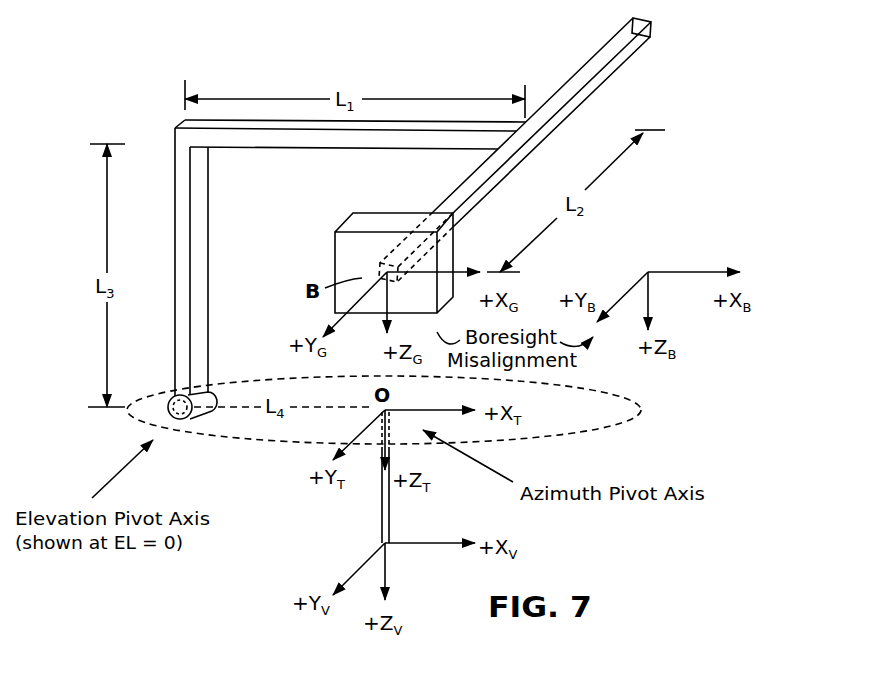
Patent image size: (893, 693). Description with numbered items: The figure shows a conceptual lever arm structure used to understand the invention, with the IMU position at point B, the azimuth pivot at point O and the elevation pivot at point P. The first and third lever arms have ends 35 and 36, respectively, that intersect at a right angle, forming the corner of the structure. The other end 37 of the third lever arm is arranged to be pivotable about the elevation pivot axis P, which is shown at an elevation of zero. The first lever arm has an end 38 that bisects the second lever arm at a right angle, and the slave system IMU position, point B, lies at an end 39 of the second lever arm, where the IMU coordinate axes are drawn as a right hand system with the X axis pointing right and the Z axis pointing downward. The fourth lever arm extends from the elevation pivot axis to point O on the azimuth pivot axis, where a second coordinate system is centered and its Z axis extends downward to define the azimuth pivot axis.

The end of lever arm L1 35 is at (176, 150).
The end of lever arm L3 36 is at (238, 148).
The other end of lever arm L3 37 is at (170, 411).
The end of lever arm L1 38 is at (523, 129).
The end of lever arm L2 39 is at (382, 272).